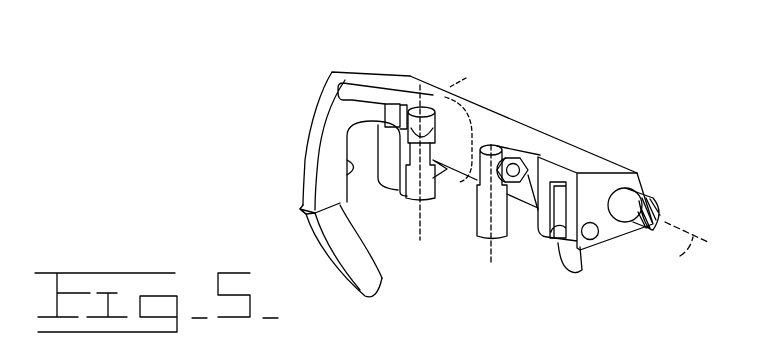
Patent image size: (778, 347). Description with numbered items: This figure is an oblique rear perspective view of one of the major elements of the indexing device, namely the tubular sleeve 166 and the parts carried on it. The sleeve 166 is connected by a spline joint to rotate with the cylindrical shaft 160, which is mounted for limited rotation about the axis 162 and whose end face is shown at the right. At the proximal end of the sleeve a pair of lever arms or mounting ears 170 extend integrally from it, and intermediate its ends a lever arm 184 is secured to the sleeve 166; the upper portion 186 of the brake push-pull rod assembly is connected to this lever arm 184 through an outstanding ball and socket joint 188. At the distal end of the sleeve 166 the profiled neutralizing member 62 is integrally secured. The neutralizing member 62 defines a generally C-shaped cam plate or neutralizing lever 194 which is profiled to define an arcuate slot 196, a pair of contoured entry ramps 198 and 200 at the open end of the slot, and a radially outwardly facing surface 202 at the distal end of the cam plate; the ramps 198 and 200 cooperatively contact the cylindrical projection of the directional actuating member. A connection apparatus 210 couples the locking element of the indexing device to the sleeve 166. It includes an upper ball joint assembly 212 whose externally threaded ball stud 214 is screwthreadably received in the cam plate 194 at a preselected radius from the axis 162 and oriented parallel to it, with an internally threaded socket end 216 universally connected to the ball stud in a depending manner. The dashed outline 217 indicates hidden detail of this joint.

The profiled neutralizing member 62 is at (302, 128).
The cylindrical shaft 160 is at (628, 197).
The axis 162 is at (673, 255).
The tubular sleeve 166 is at (503, 128).
The lever arms or mounting ears 170 is at (581, 248).
The lever arm 184 is at (531, 168).
The upper portion of the brake push-pull rod assembly 186 is at (478, 222).
The ball and socket joint 188 is at (455, 139).
The C-shaped cam plate or neutralizing lever 194 is at (315, 216).
The arcuate slot 196 is at (350, 163).
The contoured entry ramp 198 is at (382, 274).
The contoured entry ramp 200 is at (402, 190).
The radially outwardly facing surface 202 is at (328, 266).
The connection apparatus 210 is at (437, 125).
The upper ball joint assembly 212 is at (418, 102).
The externally threaded ball stud 214 is at (400, 110).
The internally threaded socket end 216 is at (426, 203).
The hidden pin portion 217 is at (474, 77).